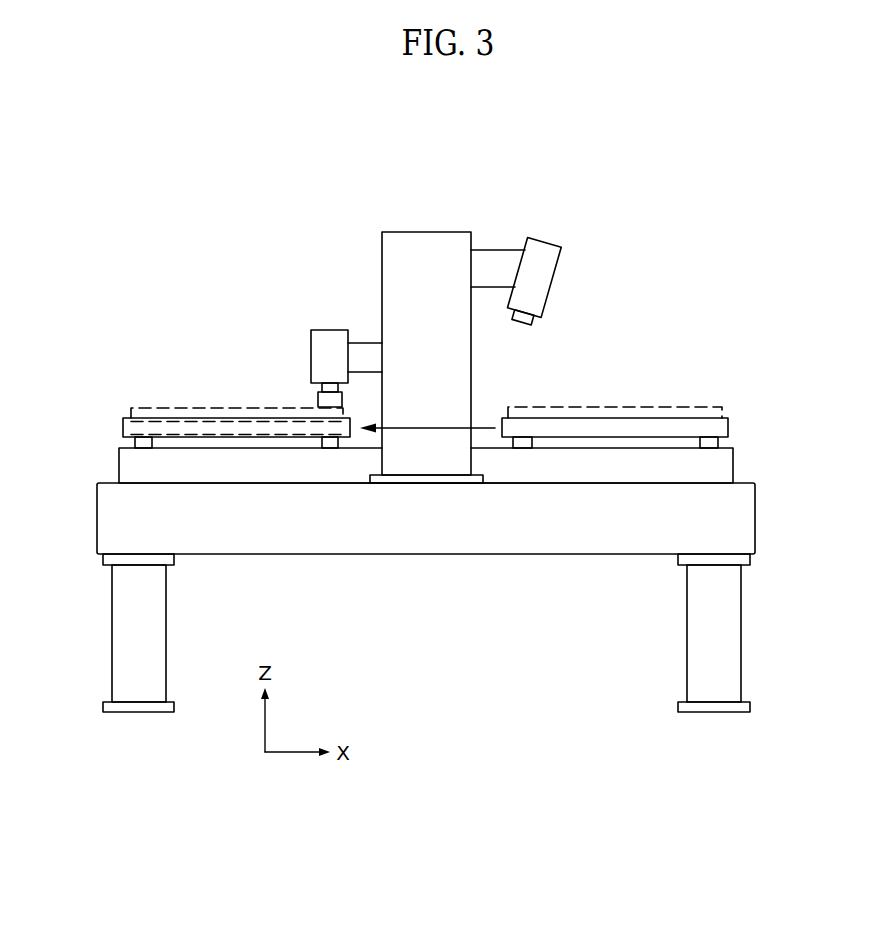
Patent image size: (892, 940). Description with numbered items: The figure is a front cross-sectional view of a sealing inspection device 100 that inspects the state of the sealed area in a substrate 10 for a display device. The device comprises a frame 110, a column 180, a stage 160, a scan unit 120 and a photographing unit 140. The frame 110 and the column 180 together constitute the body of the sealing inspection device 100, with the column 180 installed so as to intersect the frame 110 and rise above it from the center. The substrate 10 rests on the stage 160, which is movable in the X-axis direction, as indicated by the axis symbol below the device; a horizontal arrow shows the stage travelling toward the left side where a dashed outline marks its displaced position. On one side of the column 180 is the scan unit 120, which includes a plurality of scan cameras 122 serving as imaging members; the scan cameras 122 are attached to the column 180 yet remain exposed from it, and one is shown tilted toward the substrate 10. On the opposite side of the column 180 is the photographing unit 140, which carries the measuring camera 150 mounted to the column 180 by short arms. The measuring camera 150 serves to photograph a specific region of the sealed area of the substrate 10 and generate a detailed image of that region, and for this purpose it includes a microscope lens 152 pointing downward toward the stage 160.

The sealing inspection device 100 is at (724, 317).
The frame 110 is at (425, 555).
The column 180 is at (425, 230).
The photographing unit 140 is at (380, 228).
The measuring camera 150 is at (311, 350).
The microscope lens 152 is at (318, 398).
The scan unit 120 is at (727, 228).
The scan camera 122 is at (553, 283).
The stage 160 is at (662, 418).
The substrate 10 is at (615, 407).